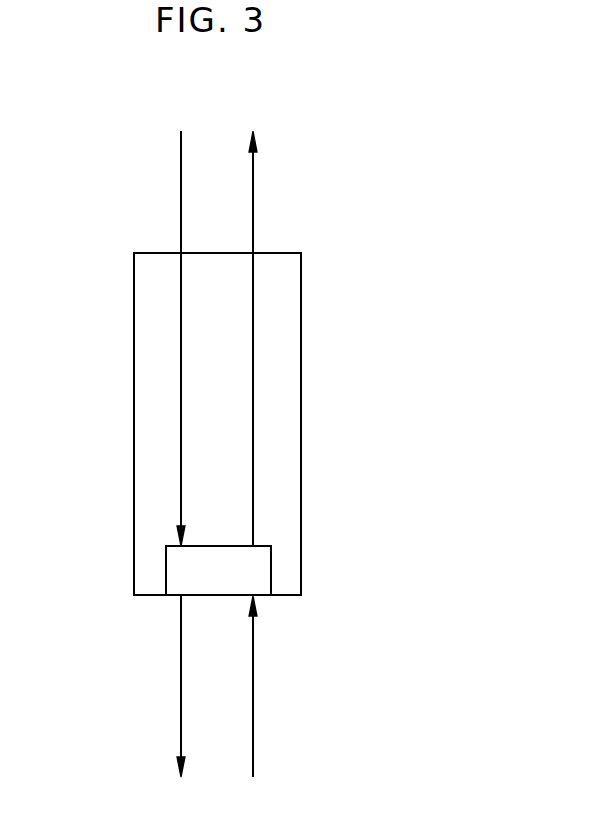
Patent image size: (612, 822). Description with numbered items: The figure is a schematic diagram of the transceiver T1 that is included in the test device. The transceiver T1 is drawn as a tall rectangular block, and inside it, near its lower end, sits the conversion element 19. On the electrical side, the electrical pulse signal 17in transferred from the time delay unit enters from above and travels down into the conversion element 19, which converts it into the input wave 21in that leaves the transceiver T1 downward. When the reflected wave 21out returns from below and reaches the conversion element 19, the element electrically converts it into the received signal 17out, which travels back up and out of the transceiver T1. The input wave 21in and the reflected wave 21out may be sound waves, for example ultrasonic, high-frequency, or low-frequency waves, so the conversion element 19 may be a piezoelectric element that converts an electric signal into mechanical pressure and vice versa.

The transceiver T1 is at (357, 285).
The conversion element 19 is at (262, 572).
The electrical pulse signal 17in is at (181, 378).
The received signal 17out is at (253, 378).
The input wave 21in is at (181, 687).
The reflected wave 21out is at (253, 686).